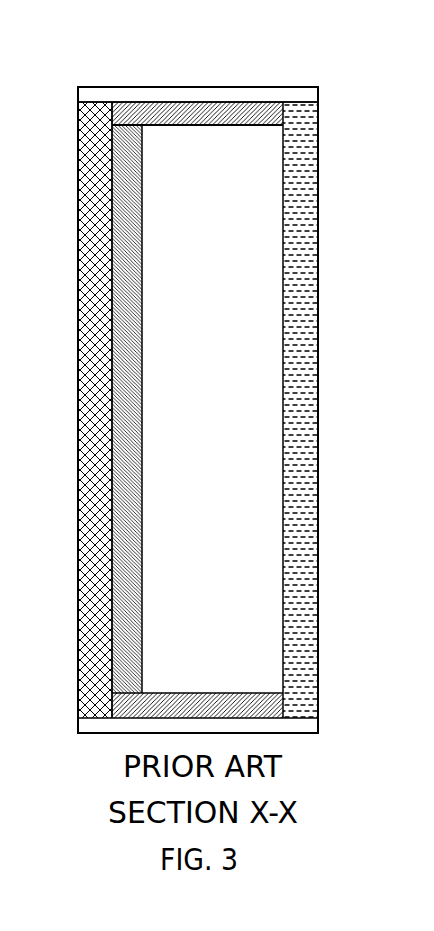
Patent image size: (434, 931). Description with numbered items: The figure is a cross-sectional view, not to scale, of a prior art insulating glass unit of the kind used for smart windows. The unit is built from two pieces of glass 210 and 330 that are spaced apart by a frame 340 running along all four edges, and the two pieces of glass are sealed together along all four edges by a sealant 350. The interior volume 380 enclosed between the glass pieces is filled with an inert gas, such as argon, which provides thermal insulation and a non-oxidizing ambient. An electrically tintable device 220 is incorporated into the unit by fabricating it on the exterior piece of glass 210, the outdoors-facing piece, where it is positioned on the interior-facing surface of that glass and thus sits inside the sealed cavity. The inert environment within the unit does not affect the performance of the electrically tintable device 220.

The exterior piece of glass 210 is at (92, 145).
The electrically tintable device 220 is at (127, 156).
The piece of glass 330 is at (303, 220).
The frame 340 is at (236, 111).
The sealant 350 is at (302, 93).
The interior volume 380 is at (247, 408).